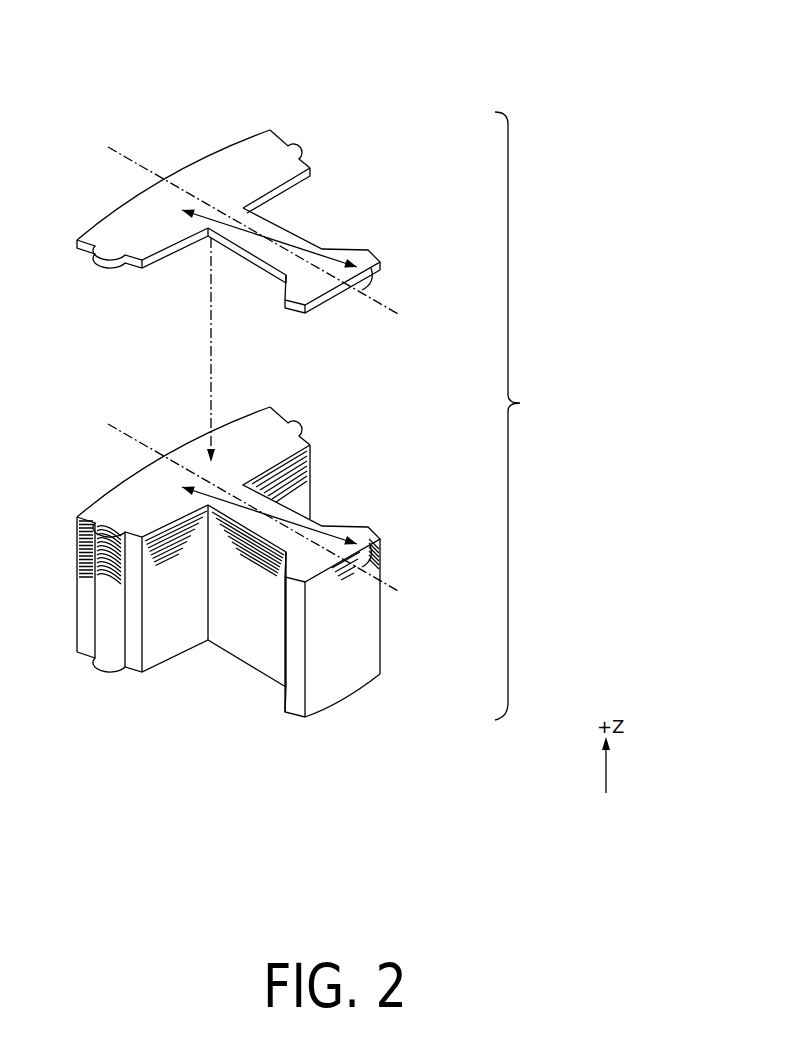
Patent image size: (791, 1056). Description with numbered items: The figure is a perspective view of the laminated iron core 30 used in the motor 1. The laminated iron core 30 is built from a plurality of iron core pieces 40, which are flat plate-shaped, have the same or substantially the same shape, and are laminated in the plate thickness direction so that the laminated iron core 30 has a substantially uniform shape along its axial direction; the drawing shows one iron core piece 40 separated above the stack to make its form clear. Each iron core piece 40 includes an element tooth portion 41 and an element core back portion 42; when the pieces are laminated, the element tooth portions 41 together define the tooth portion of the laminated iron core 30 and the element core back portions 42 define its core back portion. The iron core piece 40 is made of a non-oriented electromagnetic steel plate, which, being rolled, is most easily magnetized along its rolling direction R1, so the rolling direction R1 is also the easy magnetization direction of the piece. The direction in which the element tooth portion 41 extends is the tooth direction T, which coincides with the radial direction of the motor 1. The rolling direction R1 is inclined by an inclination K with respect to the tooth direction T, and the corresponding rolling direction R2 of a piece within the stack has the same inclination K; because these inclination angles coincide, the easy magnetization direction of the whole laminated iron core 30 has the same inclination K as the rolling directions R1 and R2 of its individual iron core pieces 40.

The motor 1 is at (320, 525).
The laminated iron core 30 is at (525, 416).
The iron core piece 40 is at (232, 260).
The element tooth portion 41 is at (267, 228).
The element core back portion 42 is at (236, 160).
The rolling direction R1 is at (290, 243).
The rolling direction R2 is at (293, 508).
The inclination K is at (380, 285).
The tooth direction T is at (396, 309).